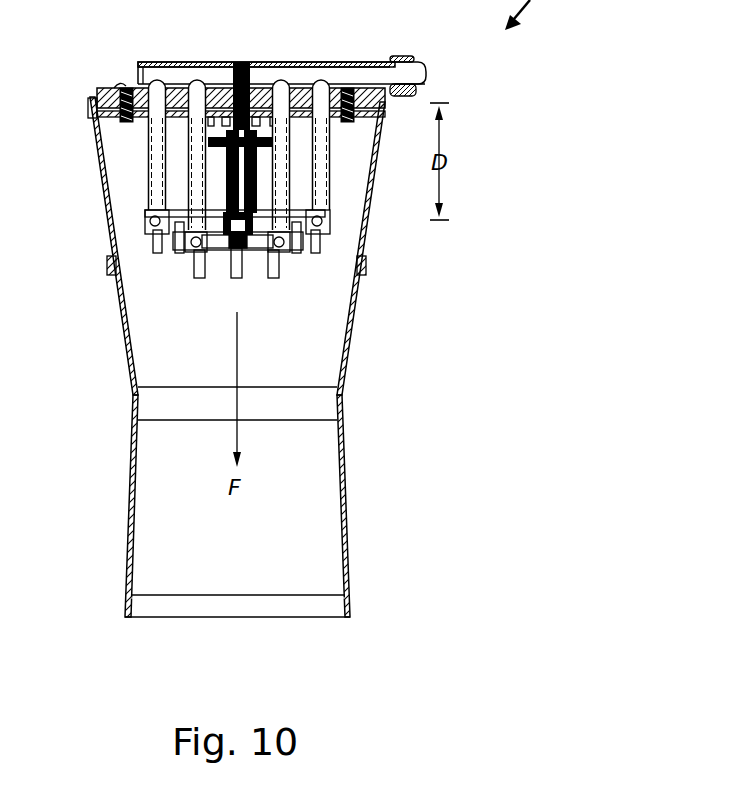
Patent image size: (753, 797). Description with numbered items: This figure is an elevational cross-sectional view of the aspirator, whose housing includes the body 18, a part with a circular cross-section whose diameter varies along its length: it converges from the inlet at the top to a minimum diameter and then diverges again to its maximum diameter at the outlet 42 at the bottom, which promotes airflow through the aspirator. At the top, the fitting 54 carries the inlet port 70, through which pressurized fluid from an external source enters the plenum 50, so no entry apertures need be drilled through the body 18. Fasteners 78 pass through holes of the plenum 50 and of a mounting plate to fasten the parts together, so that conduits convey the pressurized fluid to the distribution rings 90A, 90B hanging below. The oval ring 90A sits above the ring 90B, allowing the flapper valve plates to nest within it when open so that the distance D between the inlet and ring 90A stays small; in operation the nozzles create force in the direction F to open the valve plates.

The body 18 is at (348, 348).
The outlet 42 is at (295, 602).
The plenum 50 is at (287, 62).
The fitting 54 is at (420, 62).
The inlet port 70 is at (427, 77).
The fasteners 78 is at (133, 117).
The distribution ring 90A is at (183, 223).
The distribution ring 90B is at (217, 238).